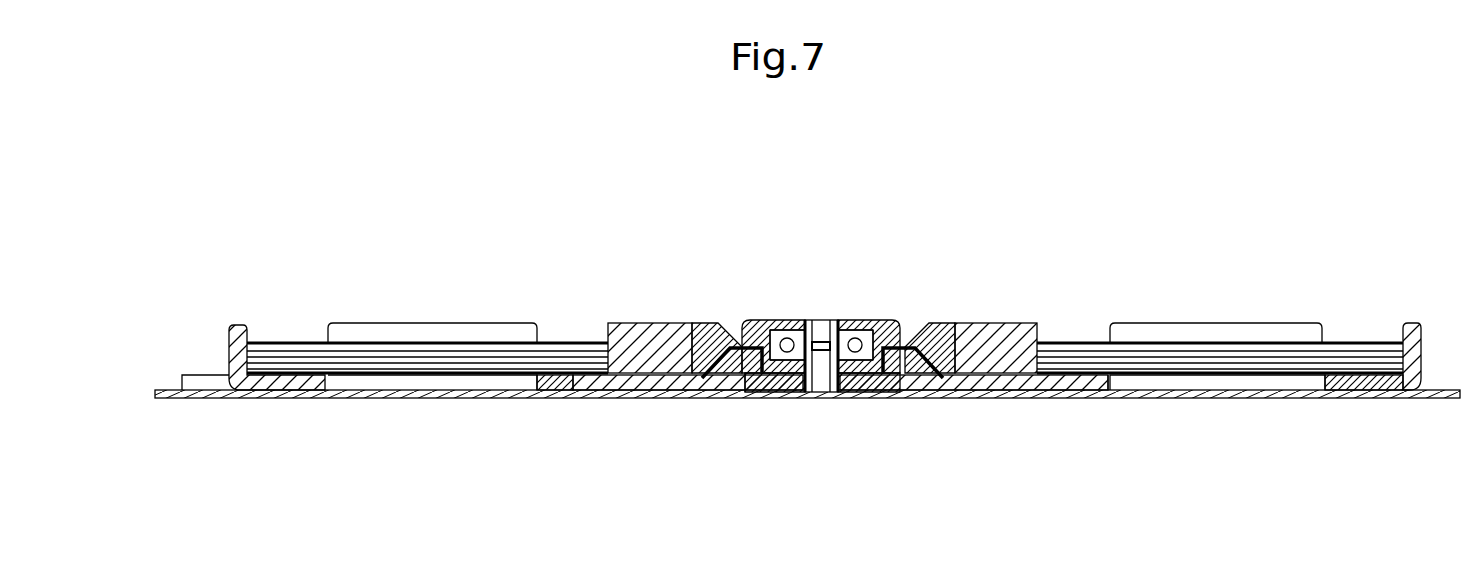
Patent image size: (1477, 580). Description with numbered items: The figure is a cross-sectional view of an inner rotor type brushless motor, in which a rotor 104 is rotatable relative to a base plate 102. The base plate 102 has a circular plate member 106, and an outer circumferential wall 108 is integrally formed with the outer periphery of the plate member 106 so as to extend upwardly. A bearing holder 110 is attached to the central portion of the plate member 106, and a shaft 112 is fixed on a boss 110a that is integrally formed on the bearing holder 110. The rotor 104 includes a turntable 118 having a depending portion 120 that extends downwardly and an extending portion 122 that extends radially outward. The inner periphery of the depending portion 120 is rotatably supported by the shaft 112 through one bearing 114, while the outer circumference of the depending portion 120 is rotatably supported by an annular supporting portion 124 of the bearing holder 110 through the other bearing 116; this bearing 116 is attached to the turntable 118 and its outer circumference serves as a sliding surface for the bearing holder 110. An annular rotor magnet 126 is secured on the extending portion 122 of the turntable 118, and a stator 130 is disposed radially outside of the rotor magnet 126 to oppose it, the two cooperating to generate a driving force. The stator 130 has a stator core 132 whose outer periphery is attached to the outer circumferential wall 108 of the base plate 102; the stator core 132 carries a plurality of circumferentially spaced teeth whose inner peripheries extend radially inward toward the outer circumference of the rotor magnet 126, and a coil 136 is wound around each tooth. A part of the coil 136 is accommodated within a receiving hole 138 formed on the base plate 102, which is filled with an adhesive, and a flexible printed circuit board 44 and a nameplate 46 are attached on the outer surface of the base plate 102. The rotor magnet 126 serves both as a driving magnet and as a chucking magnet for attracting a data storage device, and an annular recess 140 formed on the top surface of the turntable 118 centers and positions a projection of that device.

The base plate 102 is at (205, 352).
The rotor 104 is at (706, 316).
The circular plate member 106 is at (270, 400).
The outer circumferential wall 108 is at (245, 338).
The bearing holder 110 is at (863, 400).
The boss 110a is at (795, 400).
The shaft 112 is at (828, 320).
The bearing 114 is at (790, 320).
The bearing 116 is at (747, 400).
The turntable 118 is at (898, 316).
The depending portion 120 is at (905, 400).
The extending portion 122 is at (945, 318).
The annular supporting portion 124 is at (700, 400).
The annular rotor magnet 126 is at (1035, 320).
The stator 130 is at (1190, 316).
The stator core 132 is at (1260, 400).
The coil 136 is at (1255, 335).
The receiving hole 138 is at (1350, 400).
The annular recess 140 is at (727, 320).
The flexible printed circuit board 44 is at (480, 400).
The nameplate 46 is at (1150, 400).